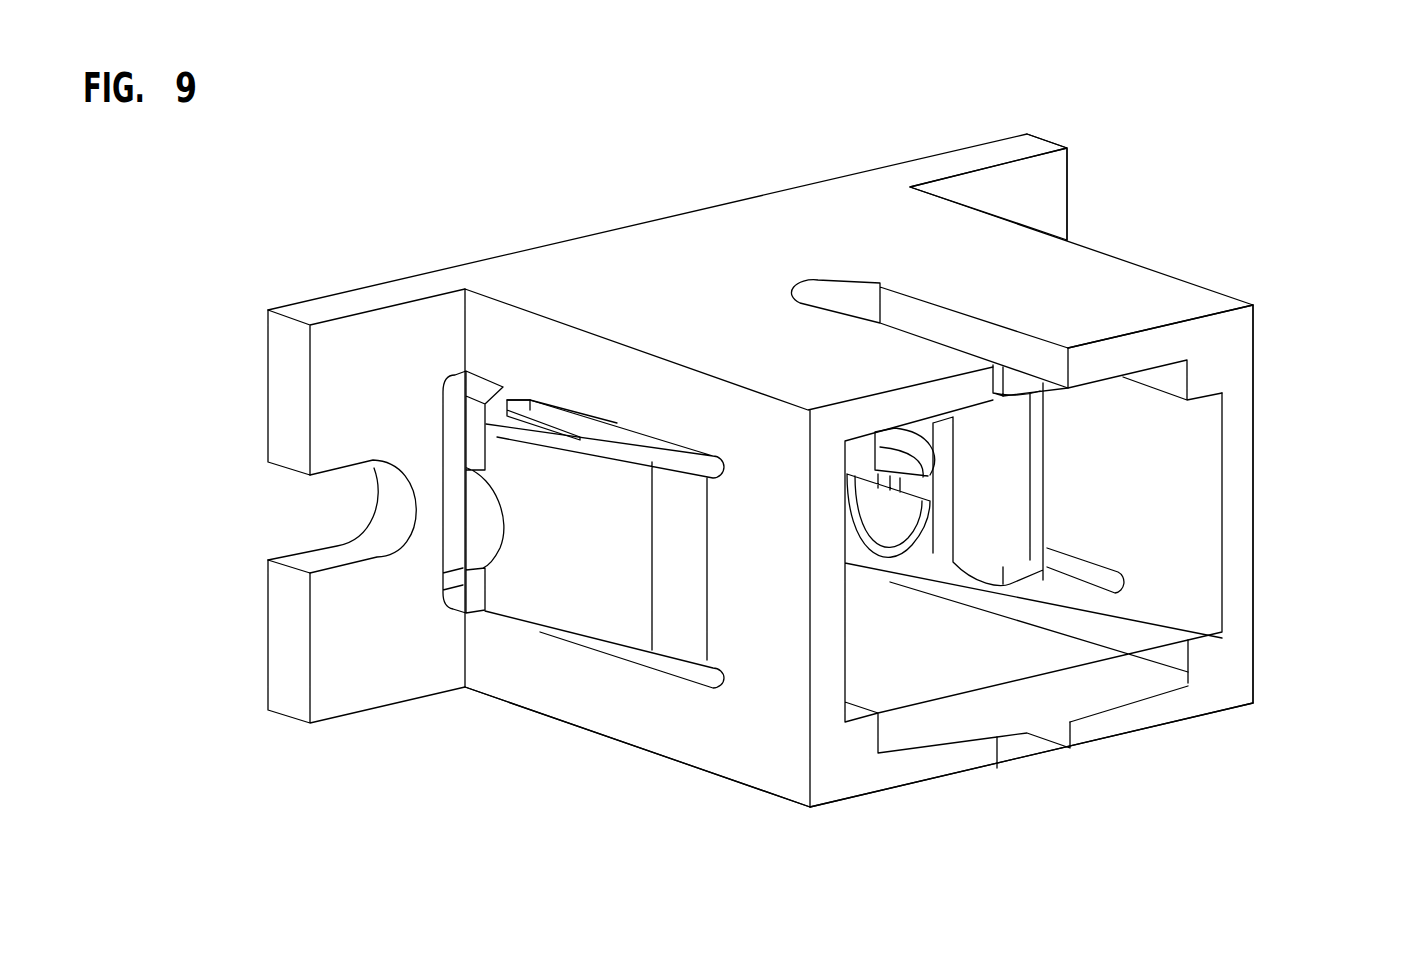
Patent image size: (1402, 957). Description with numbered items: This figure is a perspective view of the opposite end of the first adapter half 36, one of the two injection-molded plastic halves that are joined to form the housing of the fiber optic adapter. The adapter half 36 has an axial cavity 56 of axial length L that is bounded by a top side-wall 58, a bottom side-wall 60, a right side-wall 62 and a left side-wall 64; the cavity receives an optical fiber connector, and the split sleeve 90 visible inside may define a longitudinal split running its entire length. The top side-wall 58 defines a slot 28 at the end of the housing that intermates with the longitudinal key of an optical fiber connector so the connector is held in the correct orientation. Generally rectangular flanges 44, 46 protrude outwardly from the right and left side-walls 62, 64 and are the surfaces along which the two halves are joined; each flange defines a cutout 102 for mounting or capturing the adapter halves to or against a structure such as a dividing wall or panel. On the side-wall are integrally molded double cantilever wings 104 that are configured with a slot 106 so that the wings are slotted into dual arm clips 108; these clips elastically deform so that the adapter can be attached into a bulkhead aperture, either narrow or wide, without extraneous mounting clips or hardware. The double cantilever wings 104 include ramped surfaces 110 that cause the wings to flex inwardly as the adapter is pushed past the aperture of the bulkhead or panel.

The slot 28 is at (855, 301).
The first adapter half 36 is at (936, 126).
The flange 44 is at (287, 695).
The flange 46 is at (1065, 190).
The axial cavity 56 is at (1170, 527).
The top side-wall 58 is at (1138, 283).
The bottom side-wall 60 is at (928, 732).
The right side-wall 62 is at (1237, 437).
The left side-wall 64 is at (762, 742).
The split sleeve 90 is at (885, 563).
The cutout 102 is at (302, 516).
The double cantilever wings 104 is at (615, 445).
The slot 106 is at (517, 420).
The dual arm clips 108 is at (492, 431).
The ramped surfaces 110 is at (597, 556).